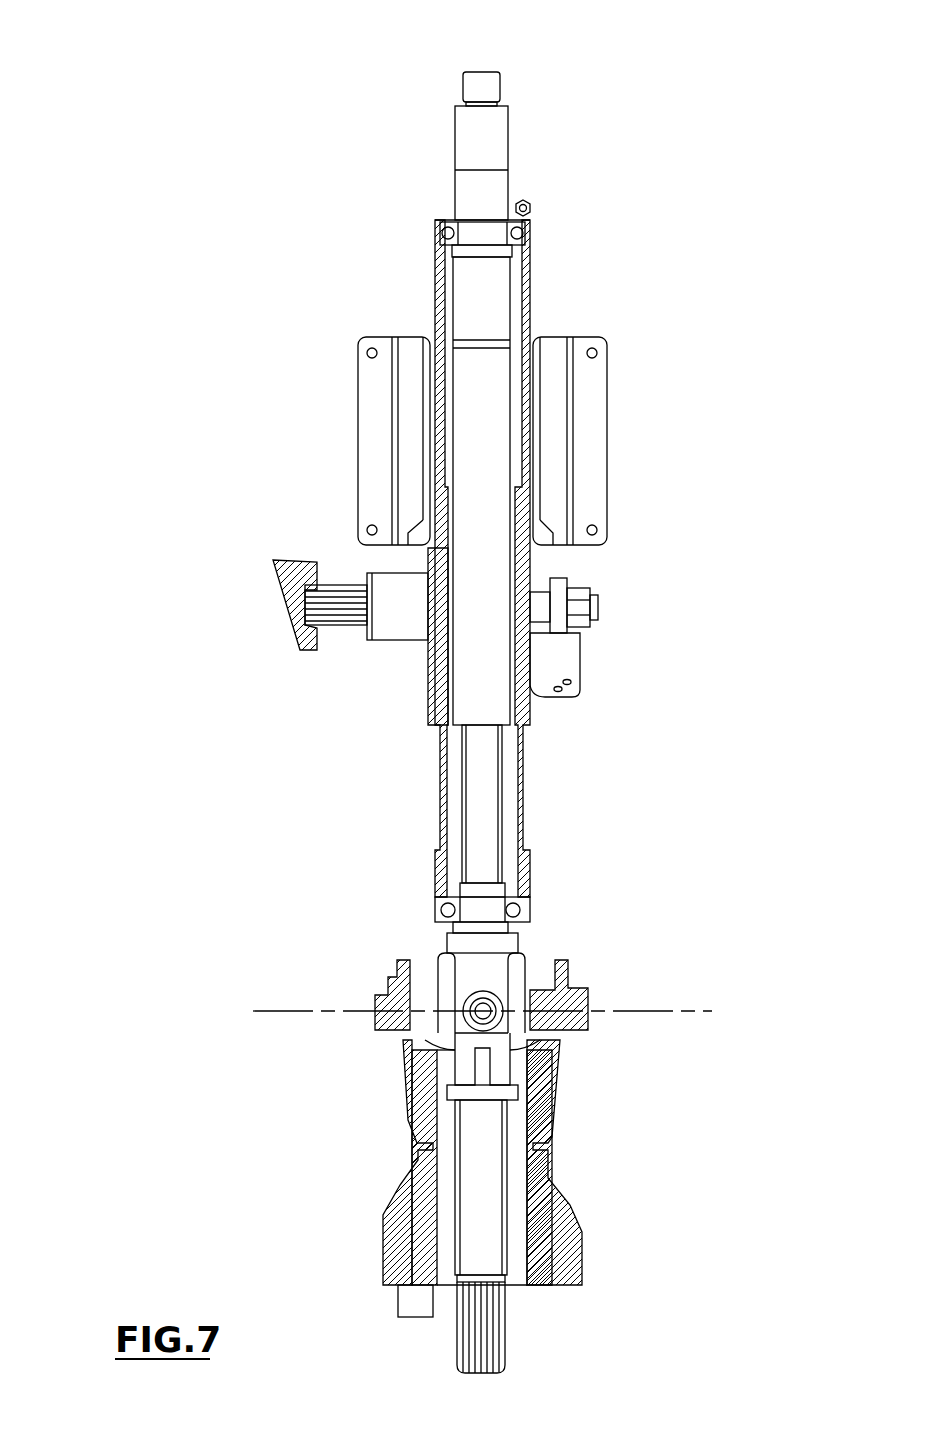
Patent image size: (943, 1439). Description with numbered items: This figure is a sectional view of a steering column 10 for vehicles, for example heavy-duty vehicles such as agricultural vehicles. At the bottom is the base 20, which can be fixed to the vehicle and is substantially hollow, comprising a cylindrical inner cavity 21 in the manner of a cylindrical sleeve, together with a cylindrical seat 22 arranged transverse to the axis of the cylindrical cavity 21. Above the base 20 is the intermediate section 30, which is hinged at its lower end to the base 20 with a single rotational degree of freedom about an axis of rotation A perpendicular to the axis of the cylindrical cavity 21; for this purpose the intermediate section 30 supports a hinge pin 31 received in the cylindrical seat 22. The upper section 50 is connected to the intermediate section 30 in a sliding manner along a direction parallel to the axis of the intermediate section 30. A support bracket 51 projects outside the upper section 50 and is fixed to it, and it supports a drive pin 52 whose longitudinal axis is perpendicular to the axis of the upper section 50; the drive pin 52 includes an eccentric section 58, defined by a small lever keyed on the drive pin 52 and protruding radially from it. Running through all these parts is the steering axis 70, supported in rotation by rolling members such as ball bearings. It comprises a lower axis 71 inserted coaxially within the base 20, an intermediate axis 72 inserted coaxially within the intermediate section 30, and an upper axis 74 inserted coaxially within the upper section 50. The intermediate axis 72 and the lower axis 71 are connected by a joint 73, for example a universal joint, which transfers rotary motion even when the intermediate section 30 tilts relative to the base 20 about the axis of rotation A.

The steering column 10 is at (118, 112).
The steering axis 70 is at (520, 143).
The upper section 50 is at (535, 292).
The upper axis 74 is at (485, 430).
The eccentric section 58 is at (560, 595).
The drive pin 52 is at (599, 612).
The support bracket 51 is at (562, 667).
The intermediate axis 72 is at (485, 775).
The intermediate section 30 is at (542, 948).
The hinge pin 31 is at (392, 1000).
The cylindrical seat 22 is at (560, 1008).
The joint 73 is at (475, 1015).
The axis of rotation A is at (672, 1013).
The base 20 is at (572, 1100).
The lower axis 71 is at (480, 1208).
The cylindrical inner cavity 21 is at (515, 1263).